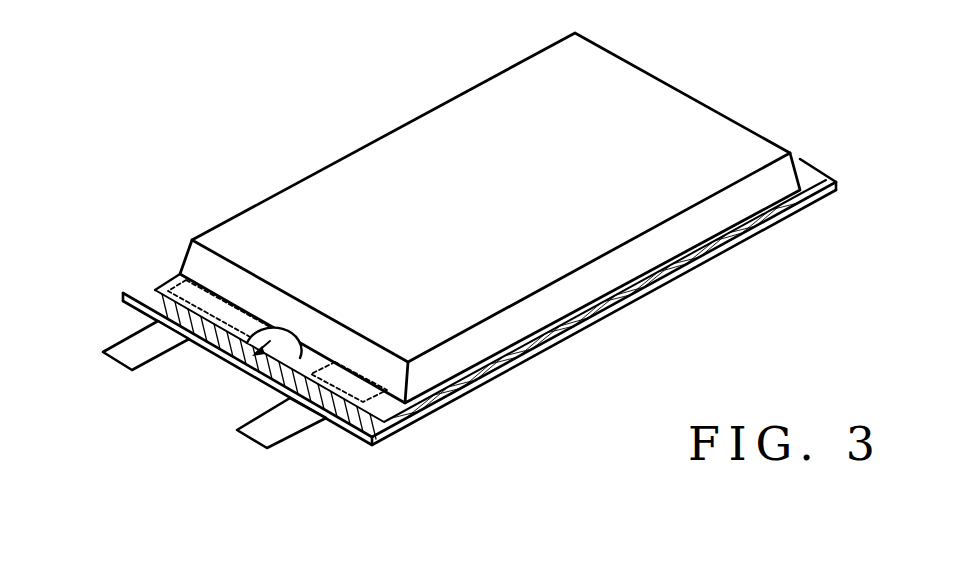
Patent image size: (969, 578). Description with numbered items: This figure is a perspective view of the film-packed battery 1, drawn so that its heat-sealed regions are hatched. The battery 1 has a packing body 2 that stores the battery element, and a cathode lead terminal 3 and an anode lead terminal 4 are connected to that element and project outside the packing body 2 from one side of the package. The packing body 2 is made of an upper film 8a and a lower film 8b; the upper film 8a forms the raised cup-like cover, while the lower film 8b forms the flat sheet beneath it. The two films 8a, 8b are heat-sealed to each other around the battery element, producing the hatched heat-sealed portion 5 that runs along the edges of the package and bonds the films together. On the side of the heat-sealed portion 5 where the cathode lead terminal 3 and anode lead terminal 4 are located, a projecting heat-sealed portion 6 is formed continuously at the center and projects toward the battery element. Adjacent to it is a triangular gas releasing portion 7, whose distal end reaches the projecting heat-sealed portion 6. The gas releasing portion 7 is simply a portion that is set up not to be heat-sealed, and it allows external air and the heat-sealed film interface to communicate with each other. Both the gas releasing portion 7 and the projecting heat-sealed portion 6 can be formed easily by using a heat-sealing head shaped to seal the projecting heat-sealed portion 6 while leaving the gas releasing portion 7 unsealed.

The film-packed battery 1 is at (360, 129).
The packing body 2 is at (497, 239).
The upper film 8a is at (663, 105).
The lower film 8b is at (747, 247).
The cathode lead terminal 3 is at (288, 428).
The anode lead terminal 4 is at (120, 347).
The heat-sealed portion 5 is at (600, 317).
The projecting heat-sealed portion 6 is at (277, 332).
The gas releasing portion 7 is at (243, 362).